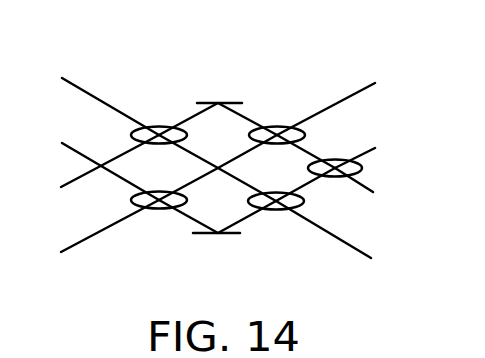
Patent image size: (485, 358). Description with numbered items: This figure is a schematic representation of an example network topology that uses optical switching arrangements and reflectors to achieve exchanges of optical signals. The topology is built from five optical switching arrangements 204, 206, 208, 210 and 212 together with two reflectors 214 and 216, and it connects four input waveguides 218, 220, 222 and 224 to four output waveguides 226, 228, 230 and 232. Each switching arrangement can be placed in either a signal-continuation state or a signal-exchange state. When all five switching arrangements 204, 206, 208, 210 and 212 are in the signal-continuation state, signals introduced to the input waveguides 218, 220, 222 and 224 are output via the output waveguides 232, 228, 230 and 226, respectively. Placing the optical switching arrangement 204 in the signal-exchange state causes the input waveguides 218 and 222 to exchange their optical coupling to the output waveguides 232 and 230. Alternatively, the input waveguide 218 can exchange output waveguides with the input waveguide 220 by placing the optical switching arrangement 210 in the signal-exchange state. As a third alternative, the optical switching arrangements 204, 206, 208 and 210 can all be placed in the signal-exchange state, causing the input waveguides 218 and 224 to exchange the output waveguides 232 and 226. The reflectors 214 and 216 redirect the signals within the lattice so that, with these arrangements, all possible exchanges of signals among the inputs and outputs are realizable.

The optical switching arrangement 204 is at (155, 127).
The optical switching arrangement 206 is at (164, 210).
The optical switching arrangement 208 is at (284, 127).
The optical switching arrangement 210 is at (272, 212).
The optical switching arrangement 212 is at (336, 178).
The reflector 214 is at (202, 101).
The reflector 216 is at (230, 235).
The input waveguide 218 is at (75, 85).
The input waveguide 220 is at (78, 151).
The input waveguide 222 is at (80, 178).
The input waveguide 224 is at (77, 250).
The output waveguide 226 is at (340, 102).
The output waveguide 228 is at (362, 150).
The output waveguide 230 is at (368, 186).
The output waveguide 232 is at (361, 252).